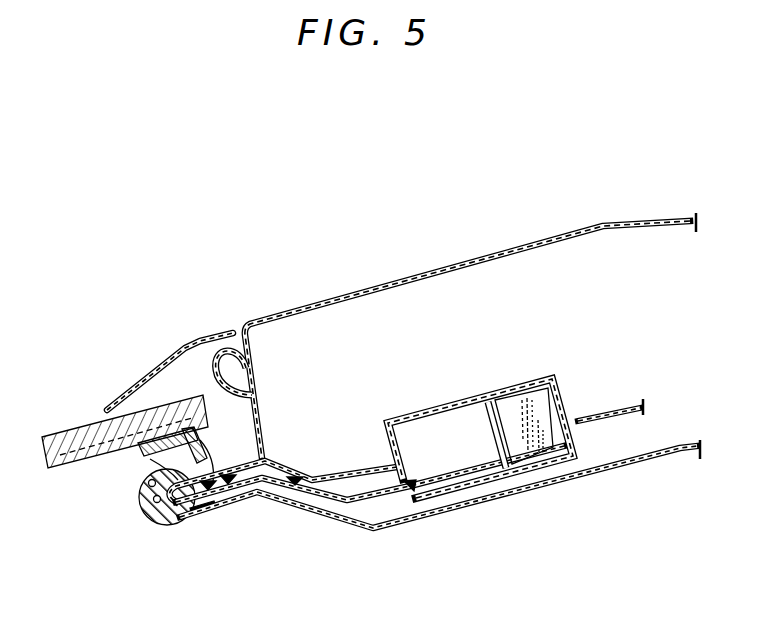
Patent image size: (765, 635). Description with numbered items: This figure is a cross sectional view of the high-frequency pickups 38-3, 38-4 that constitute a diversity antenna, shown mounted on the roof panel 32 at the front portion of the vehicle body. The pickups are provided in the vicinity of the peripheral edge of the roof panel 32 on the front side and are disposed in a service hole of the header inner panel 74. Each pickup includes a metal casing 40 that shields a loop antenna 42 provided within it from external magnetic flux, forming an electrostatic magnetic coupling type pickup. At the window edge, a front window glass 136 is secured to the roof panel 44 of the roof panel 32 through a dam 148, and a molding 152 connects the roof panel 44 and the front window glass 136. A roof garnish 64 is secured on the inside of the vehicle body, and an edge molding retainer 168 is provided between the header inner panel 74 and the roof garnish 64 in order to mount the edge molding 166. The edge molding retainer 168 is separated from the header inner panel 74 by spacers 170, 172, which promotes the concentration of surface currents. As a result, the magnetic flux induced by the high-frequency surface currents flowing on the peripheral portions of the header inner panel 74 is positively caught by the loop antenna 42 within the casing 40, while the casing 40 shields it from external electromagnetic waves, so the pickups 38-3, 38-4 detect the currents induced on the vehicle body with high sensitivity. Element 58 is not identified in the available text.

The roof panel 32 is at (528, 241).
The roof panel 44 is at (333, 301).
The molding 152 is at (172, 353).
The front window glass 136 is at (69, 434).
The dam 148 is at (170, 453).
The edge molding 166 is at (158, 519).
The spacer 172 is at (214, 500).
The spacer 170 is at (292, 486).
The roof garnish 64 is at (316, 522).
The header inner panel 74 is at (338, 471).
The edge molding retainer 168 is at (390, 496).
The loop antenna 42 is at (411, 484).
The high-frequency pickup 38-3 is at (482, 440).
The high-frequency pickup 38-4 is at (482, 440).
The metal casing 40 is at (527, 381).
The window 58 is at (541, 451).